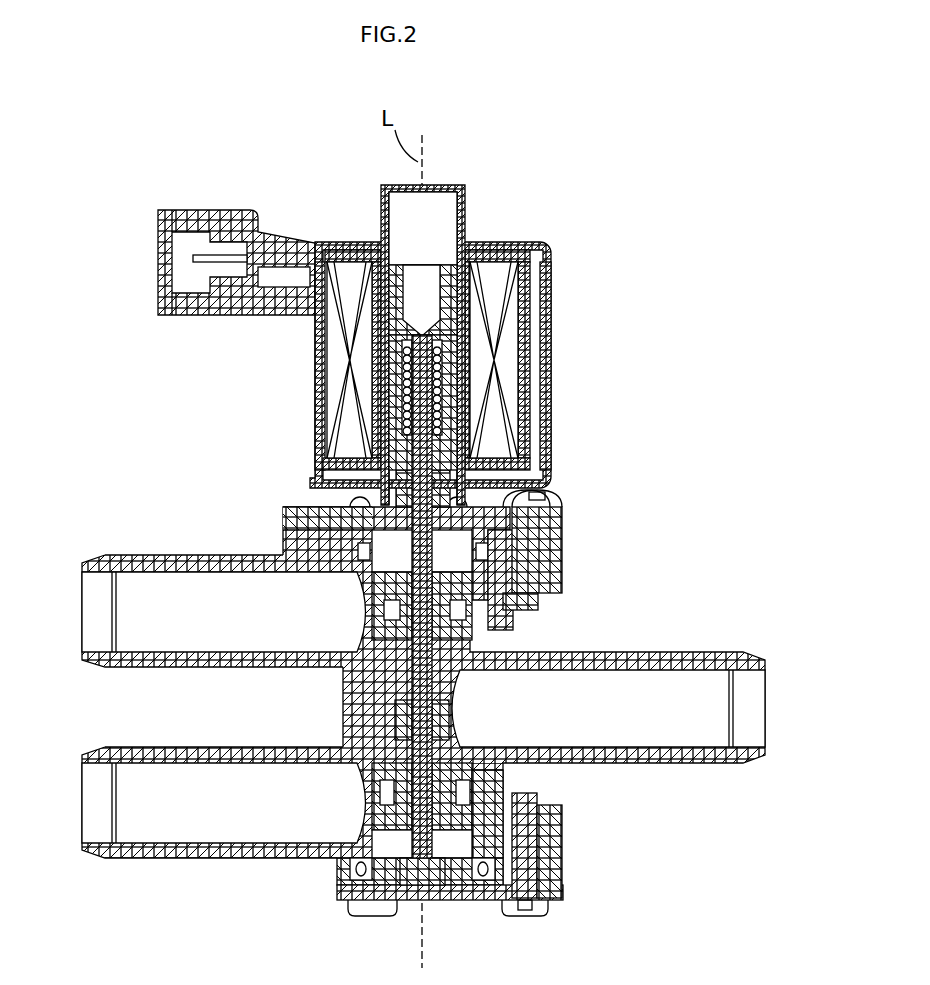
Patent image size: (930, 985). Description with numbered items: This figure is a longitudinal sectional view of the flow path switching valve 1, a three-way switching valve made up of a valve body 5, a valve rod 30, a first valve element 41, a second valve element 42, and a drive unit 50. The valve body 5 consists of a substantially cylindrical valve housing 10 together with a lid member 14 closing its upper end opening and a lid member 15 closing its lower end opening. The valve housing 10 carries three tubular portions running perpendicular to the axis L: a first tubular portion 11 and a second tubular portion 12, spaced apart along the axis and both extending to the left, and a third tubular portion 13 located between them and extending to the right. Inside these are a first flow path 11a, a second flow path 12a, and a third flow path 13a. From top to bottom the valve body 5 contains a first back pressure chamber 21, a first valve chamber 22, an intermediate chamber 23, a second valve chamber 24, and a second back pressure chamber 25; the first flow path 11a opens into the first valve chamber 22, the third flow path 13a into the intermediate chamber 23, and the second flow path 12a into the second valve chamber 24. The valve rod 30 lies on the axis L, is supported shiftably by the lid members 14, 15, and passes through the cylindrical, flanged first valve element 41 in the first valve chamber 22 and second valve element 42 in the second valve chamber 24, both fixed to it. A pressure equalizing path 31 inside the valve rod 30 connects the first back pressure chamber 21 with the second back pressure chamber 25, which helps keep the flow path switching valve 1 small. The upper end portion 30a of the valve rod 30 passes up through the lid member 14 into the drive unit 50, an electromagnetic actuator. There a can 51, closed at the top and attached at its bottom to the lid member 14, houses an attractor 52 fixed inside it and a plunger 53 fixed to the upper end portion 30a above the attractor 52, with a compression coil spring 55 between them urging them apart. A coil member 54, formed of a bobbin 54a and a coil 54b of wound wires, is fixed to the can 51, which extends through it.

The flow path switching valve 1 is at (497, 166).
The valve body 5 is at (571, 557).
The valve housing 10 is at (343, 678).
The first tubular portion 11 is at (224, 570).
The first flow path 11a is at (185, 575).
The second tubular portion 12 is at (224, 842).
The second flow path 12a is at (185, 838).
The third tubular portion 13 is at (608, 665).
The third flow path 13a is at (695, 670).
The lid member 14 is at (292, 522).
The lid member 15 is at (338, 892).
The first back pressure chamber 21 is at (502, 548).
The first valve chamber 22 is at (505, 630).
The intermediate chamber 23 is at (395, 720).
The second valve chamber 24 is at (490, 790).
The second back pressure chamber 25 is at (492, 866).
The valve rod 30 is at (546, 462).
The upper end portion 30a is at (442, 350).
The pressure equalizing path 31 is at (429, 864).
The first valve element 41 is at (530, 596).
The second valve element 42 is at (548, 825).
The drive unit 50 is at (553, 252).
The can 51 is at (462, 216).
The attractor 52 is at (452, 436).
The plunger 53 is at (444, 326).
The coil member 54 is at (349, 360).
The bobbin 54a is at (340, 332).
The coil 54b is at (345, 396).
The compression coil spring 55 is at (322, 422).